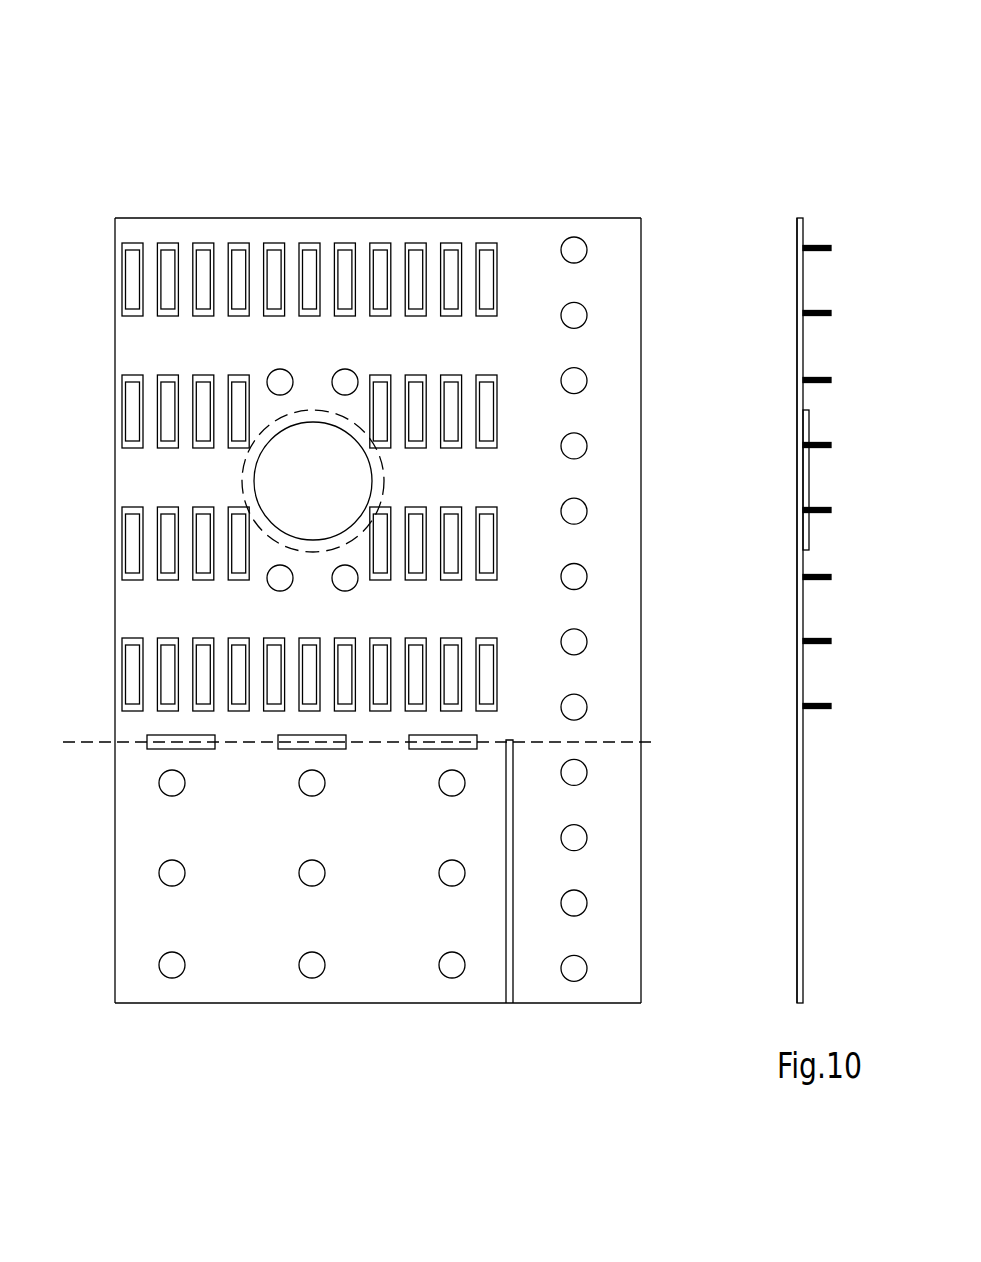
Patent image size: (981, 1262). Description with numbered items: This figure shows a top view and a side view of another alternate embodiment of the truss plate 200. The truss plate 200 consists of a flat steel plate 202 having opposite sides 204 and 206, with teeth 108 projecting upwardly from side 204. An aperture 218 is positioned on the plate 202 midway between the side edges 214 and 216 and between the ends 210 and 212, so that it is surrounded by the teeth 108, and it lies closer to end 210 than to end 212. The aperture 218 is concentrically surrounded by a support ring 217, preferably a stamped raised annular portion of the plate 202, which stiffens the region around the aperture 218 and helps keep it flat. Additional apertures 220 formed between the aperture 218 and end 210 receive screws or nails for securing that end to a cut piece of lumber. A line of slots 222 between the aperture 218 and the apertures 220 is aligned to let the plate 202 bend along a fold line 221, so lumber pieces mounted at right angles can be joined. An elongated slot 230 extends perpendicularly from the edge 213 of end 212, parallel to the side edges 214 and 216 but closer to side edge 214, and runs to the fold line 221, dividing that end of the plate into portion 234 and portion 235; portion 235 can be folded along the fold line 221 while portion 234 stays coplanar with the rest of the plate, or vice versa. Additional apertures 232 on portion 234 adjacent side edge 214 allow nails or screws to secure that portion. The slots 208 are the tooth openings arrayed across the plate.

In FIG. 9, the truss plate 200 is at (333, 82).
In FIG. 9, the flat steel plate 202 is at (172, 235).
In FIG. 10, the flat steel plate 202 is at (803, 755).
In FIG. 10, the side 204 is at (803, 283).
In FIG. 10, the side 206 is at (797, 322).
In FIG. 9, the slots 208 is at (487, 300).
In FIG. 9, the end 210 is at (350, 218).
In FIG. 9, the end 212 is at (425, 1005).
In FIG. 9, the edge 213 is at (270, 1005).
In FIG. 9, the side edge 214 is at (641, 590).
In FIG. 9, the side edge 216 is at (115, 592).
In FIG. 9, the support ring 217 is at (245, 470).
In FIG. 10, the support ring 217 is at (809, 550).
In FIG. 9, the aperture 218 is at (358, 492).
In FIG. 10, the aperture 218 is at (809, 478).
In FIG. 9, the apertures 220 is at (310, 968).
In FIG. 9, the fold line 221 is at (598, 740).
In FIG. 9, the slots 222 is at (290, 752).
In FIG. 9, the elongated slot 230 is at (515, 930).
In FIG. 9, the apertures 232 is at (585, 840).
In FIG. 9, the portion 234 is at (623, 988).
In FIG. 9, the portion 235 is at (200, 828).
In FIG. 10, the teeth 108 is at (825, 635).